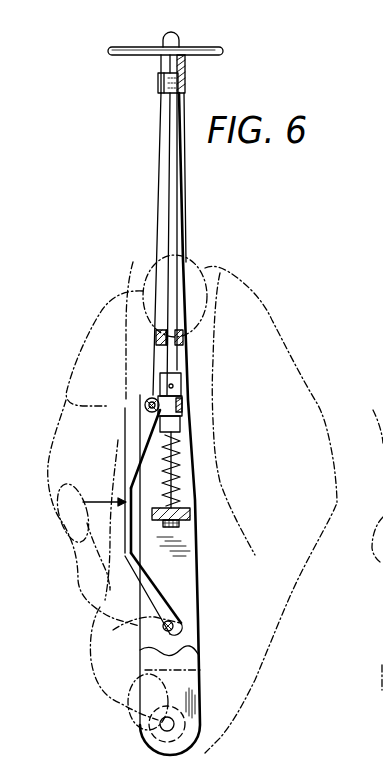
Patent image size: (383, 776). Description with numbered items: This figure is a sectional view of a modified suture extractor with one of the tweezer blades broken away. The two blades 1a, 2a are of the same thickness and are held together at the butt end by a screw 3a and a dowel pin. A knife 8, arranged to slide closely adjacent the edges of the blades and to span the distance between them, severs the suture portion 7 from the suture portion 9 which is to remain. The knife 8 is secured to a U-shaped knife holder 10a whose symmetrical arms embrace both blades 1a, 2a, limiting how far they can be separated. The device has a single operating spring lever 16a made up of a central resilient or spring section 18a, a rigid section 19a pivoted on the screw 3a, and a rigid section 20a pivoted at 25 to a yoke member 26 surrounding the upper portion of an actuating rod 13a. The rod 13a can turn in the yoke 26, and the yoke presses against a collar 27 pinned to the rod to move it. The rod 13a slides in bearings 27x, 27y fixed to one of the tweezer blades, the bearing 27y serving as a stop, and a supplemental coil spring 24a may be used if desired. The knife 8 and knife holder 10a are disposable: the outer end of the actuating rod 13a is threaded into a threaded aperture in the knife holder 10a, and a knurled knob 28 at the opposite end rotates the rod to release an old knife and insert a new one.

The suture portion 7 is at (125, 47).
The suture portion 9 is at (206, 47).
The knife 8 is at (182, 58).
The knife holder 10a is at (158, 85).
The actuating rod 13a is at (178, 198).
The bearing 27x is at (180, 340).
The collar 27 is at (178, 386).
The yoke member 26 is at (183, 412).
The pivot 25 is at (146, 405).
The bearing 27y is at (181, 423).
The supplemental coil spring 24a is at (181, 500).
The knurled knob 28 is at (191, 522).
The blade 1a is at (187, 572).
The rigid section 20a is at (160, 400).
The spring lever 16a is at (126, 455).
The rigid section 19a is at (153, 606).
The screw 3a is at (181, 626).
The blade 2a is at (186, 661).
The resilient section 18a is at (132, 522).